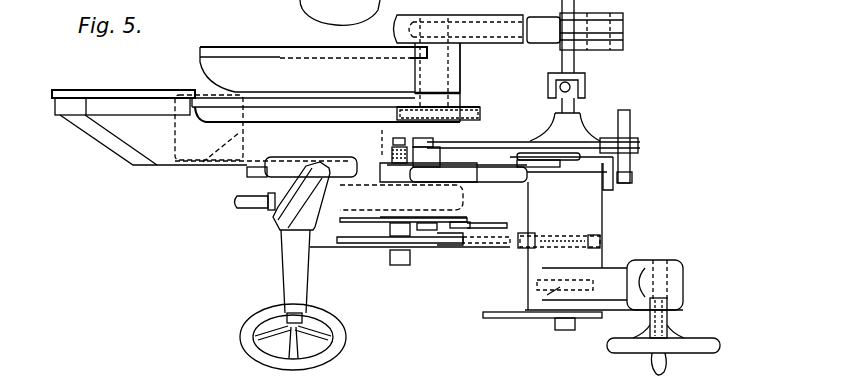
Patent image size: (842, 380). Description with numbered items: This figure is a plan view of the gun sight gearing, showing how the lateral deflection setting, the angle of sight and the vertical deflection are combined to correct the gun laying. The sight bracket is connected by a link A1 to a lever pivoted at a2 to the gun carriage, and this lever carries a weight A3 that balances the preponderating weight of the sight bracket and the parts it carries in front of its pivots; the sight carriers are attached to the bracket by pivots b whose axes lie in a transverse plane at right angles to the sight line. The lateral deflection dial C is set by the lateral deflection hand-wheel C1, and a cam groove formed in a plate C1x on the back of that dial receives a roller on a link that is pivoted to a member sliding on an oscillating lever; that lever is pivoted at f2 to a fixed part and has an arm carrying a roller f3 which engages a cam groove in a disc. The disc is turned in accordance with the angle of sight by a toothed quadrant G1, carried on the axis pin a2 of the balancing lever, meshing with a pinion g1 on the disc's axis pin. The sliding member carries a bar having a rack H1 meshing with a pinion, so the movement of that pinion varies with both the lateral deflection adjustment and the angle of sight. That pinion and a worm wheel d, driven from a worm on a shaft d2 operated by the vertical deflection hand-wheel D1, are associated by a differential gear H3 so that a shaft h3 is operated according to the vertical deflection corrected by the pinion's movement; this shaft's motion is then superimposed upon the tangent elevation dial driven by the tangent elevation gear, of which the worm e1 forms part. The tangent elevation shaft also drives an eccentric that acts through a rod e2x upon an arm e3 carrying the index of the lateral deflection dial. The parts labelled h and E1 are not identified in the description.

The shaft arm h is at (403, 25).
The link A1 is at (470, 32).
The toothed quadrant G1 is at (417, 108).
The axis pin a2 is at (440, 70).
The pinion g1 is at (477, 107).
The arm e3 is at (430, 160).
The shaft h3 is at (573, 93).
The rod e2x is at (537, 143).
The worm e1 is at (627, 122).
The plate E1 is at (630, 148).
The roller f3 is at (387, 156).
The weight A3 is at (204, 166).
The differential gear H3 is at (457, 190).
The pivot f2 is at (460, 210).
The lateral deflection dial C is at (523, 177).
The plate C1x is at (343, 247).
The lateral deflection hand-wheel C1 is at (327, 317).
The rack H1 is at (507, 245).
The shaft d2 is at (617, 280).
The pivot b is at (500, 323).
The worm wheel d is at (531, 318).
The vertical deflection hand-wheel D1 is at (682, 347).